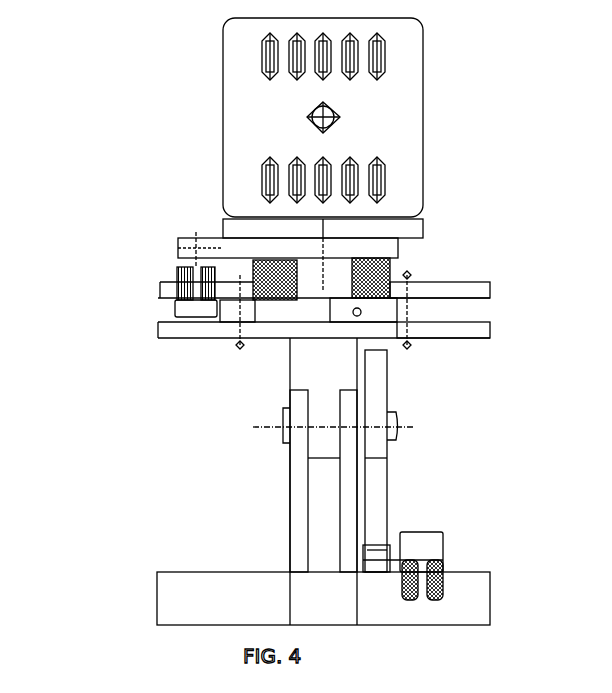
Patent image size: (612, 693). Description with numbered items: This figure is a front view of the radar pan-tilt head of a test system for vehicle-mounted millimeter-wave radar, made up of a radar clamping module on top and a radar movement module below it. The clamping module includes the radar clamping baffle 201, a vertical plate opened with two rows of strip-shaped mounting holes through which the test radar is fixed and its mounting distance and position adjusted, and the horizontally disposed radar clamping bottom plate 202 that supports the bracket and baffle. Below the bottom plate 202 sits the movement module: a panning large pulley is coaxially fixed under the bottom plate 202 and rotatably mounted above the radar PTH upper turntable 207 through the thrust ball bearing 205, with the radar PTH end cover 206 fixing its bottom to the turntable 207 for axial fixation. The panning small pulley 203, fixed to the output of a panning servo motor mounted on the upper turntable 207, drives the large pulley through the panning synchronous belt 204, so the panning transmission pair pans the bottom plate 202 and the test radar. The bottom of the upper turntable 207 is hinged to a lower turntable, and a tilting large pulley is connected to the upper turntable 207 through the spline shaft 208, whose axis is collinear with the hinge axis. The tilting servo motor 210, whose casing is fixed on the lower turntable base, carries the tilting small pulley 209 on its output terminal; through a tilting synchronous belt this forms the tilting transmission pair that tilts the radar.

The radar clamping baffle 201 is at (237, 85).
The radar clamping bottom plate 202 is at (232, 230).
The panning small pulley 203 is at (183, 238).
The panning synchronous belt 204 is at (222, 250).
The thrust ball bearing 205 is at (258, 263).
The radar PTH end cover 206 is at (262, 303).
The radar PTH upper turntable 207 is at (300, 373).
The spline shaft 208 is at (285, 435).
The tilting small pulley 209 is at (373, 546).
The tilting servo motor 210 is at (412, 544).